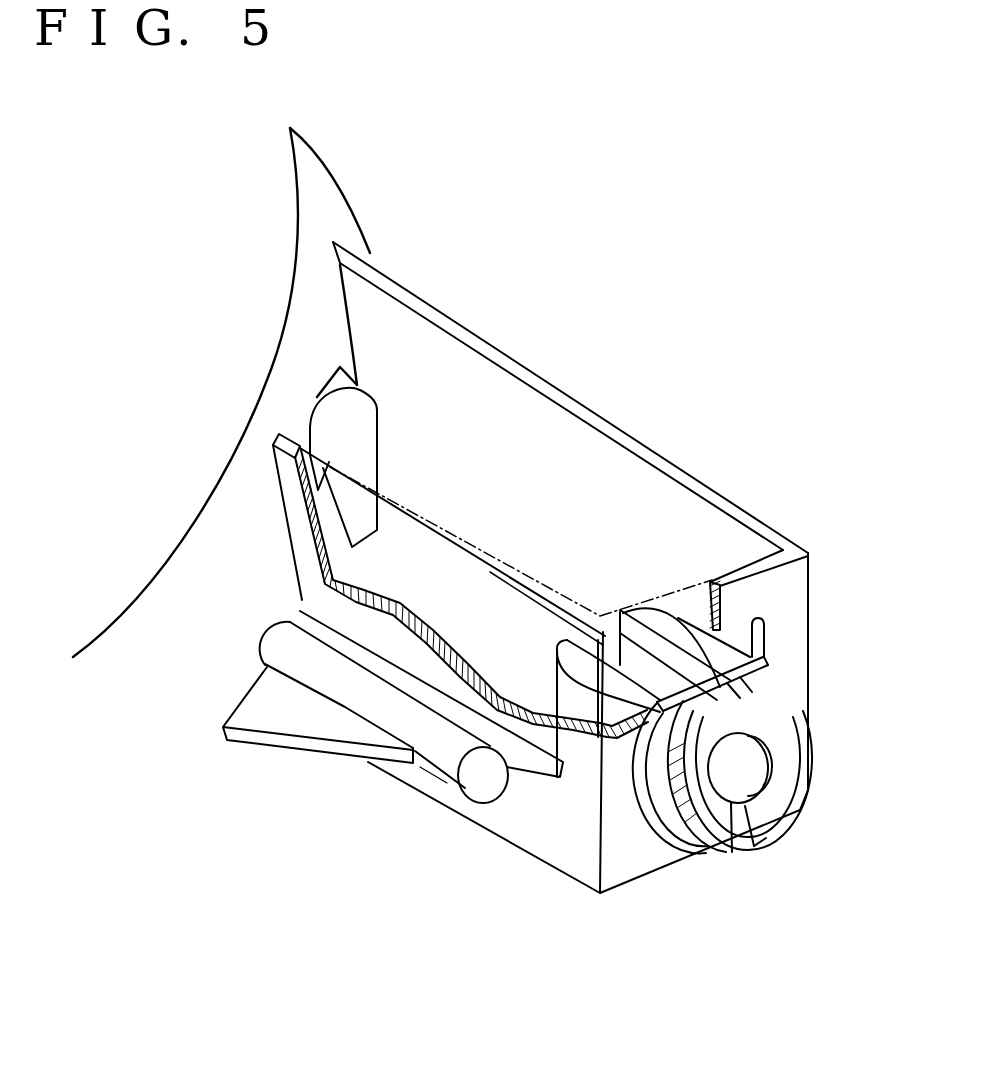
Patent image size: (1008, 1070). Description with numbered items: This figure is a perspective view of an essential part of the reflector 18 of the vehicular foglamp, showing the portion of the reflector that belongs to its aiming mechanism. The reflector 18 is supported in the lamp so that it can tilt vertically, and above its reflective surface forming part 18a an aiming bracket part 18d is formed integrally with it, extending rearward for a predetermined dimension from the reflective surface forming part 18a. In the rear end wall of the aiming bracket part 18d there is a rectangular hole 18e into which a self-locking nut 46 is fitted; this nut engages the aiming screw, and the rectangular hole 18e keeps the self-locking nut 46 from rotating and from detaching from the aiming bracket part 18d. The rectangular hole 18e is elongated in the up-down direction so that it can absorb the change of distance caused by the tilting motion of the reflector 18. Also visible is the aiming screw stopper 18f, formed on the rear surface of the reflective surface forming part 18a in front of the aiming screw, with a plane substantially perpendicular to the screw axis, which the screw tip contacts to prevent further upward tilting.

The reflector 18 is at (370, 210).
The reflective surface forming part 18a is at (320, 190).
The aiming bracket part 18d is at (573, 403).
The rectangular hole 18e is at (760, 635).
The aiming screw stopper 18f is at (363, 445).
The self-locking nut 46 is at (813, 724).